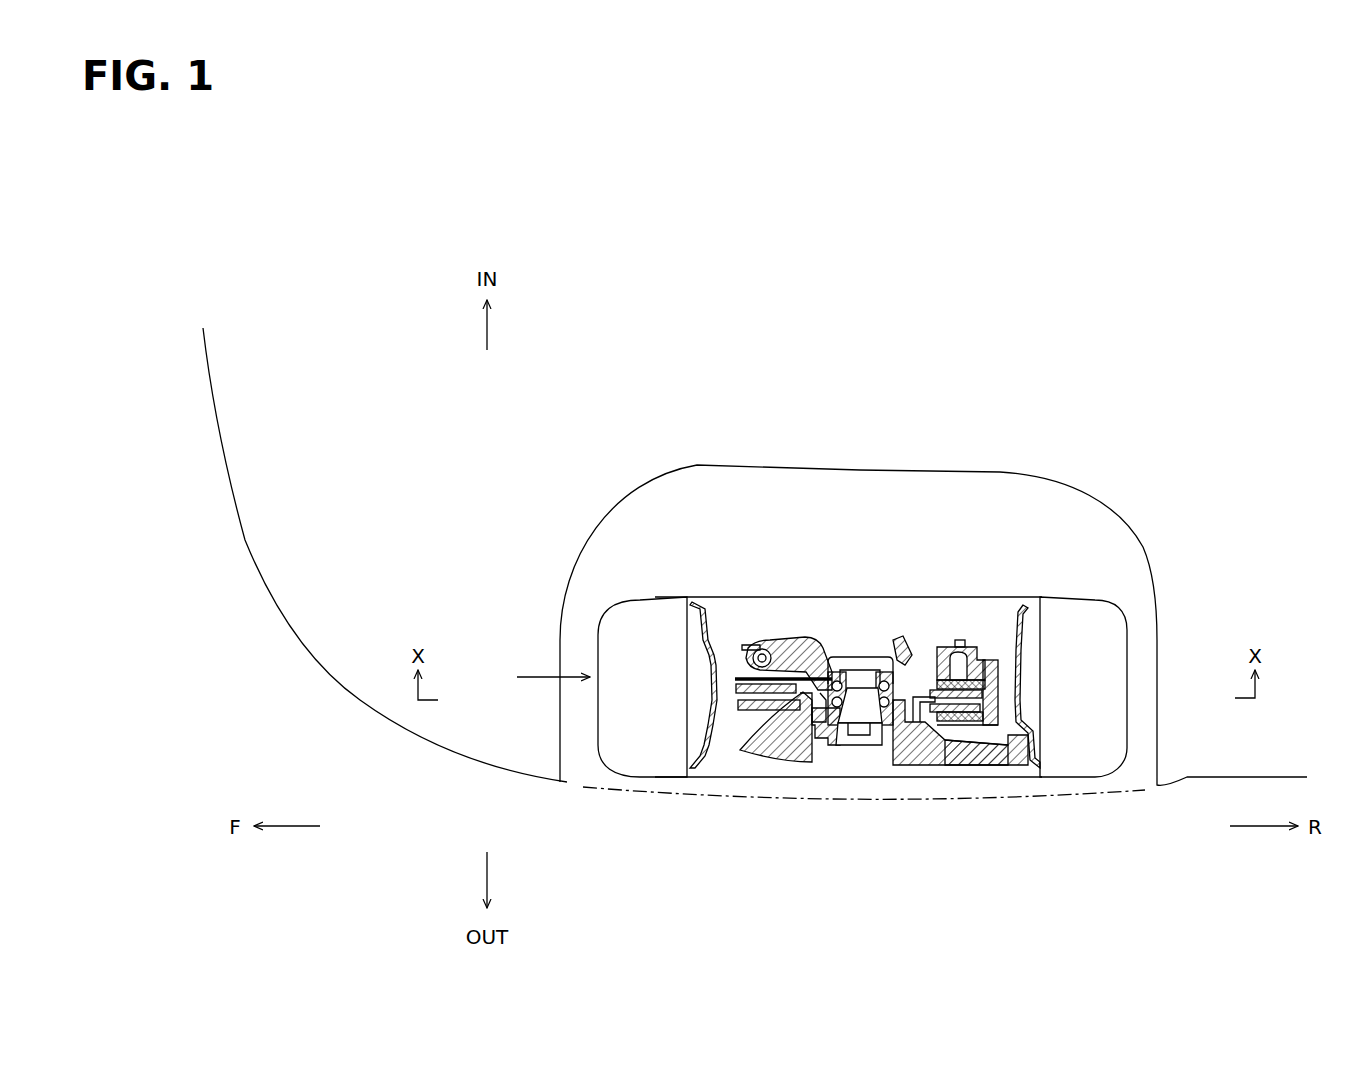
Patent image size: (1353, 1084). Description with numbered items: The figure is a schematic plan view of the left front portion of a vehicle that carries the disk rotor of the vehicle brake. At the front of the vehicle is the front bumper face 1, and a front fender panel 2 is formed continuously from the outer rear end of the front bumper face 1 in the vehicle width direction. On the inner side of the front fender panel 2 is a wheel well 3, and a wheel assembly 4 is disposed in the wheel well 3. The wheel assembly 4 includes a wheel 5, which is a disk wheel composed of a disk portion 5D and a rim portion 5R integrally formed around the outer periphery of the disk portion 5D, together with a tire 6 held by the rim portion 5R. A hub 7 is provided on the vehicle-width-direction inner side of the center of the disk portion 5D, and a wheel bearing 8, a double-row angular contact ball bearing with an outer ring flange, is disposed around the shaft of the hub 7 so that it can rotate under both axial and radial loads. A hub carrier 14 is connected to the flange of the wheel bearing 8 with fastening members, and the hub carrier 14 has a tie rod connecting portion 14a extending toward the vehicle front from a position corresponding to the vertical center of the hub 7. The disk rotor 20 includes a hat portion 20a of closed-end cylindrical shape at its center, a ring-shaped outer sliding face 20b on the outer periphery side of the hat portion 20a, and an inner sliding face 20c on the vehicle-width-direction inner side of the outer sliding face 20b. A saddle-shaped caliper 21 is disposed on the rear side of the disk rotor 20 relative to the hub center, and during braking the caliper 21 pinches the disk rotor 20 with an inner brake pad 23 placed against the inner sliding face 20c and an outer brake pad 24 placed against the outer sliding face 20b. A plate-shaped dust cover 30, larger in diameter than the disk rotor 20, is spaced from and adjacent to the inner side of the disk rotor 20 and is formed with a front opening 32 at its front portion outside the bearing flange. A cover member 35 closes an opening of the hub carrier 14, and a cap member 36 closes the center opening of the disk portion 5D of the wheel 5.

The front bumper face 1 is at (223, 450).
The front fender panel 2 is at (833, 802).
The wheel well 3 is at (940, 472).
The wheel assembly 4 is at (543, 678).
The wheel 5 is at (935, 770).
The disk portion 5D is at (973, 760).
The rim portion 5R is at (705, 668).
The tire 6 is at (641, 597).
The hub 7 is at (860, 740).
The wheel bearing 8 is at (900, 687).
The hub carrier 14 is at (900, 632).
The tie rod connecting portion 14a is at (752, 643).
The disk rotor 20 is at (726, 776).
The hat portion 20a is at (767, 709).
The outer sliding face 20b is at (747, 703).
The inner sliding face 20c is at (745, 685).
The caliper 21 is at (1010, 635).
The inner brake pad 23 is at (993, 682).
The outer brake pad 24 is at (1000, 707).
The dust cover 30 is at (734, 670).
The front opening 32 is at (808, 650).
The cover member 35 is at (862, 655).
The cap member 36 is at (842, 738).